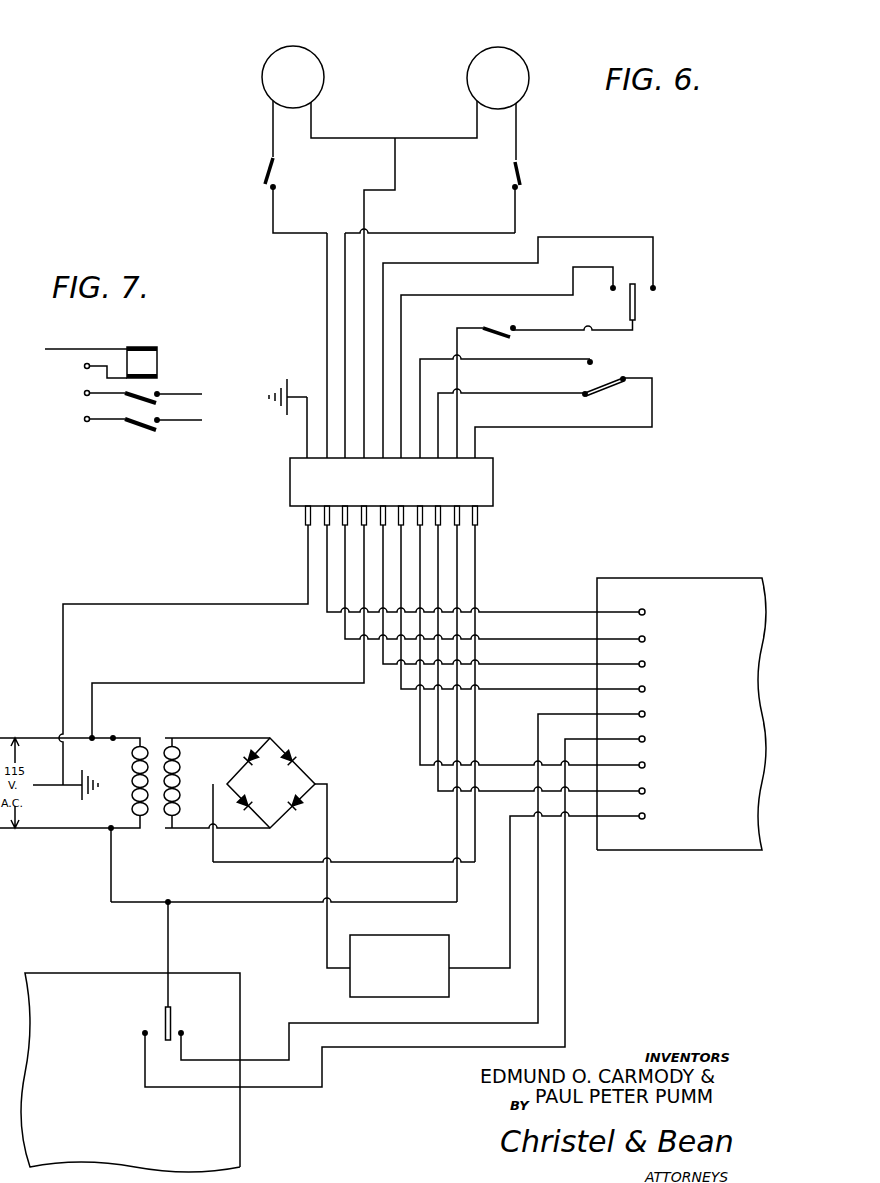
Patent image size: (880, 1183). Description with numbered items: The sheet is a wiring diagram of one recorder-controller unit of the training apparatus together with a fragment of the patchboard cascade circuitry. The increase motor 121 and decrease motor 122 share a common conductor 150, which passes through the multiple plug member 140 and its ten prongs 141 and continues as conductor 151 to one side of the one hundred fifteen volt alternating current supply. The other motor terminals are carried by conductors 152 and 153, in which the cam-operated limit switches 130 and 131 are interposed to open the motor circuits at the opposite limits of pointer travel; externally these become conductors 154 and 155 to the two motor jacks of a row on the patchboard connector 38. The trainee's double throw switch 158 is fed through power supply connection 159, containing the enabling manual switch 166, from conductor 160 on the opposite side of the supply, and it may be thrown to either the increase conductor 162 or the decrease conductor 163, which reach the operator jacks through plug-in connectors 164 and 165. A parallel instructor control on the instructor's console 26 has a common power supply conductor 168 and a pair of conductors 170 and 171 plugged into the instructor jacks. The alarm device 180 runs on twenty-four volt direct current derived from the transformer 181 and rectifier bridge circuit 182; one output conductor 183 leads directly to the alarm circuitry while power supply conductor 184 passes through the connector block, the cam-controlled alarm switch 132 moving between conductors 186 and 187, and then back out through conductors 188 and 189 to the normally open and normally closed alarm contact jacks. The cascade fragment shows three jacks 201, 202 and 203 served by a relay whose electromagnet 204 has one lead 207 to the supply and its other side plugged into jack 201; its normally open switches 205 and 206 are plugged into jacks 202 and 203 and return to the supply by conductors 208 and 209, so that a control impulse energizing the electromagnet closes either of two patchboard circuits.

In FIG. 6, the increase motor 121 is at (312, 51).
In FIG. 6, the decrease motor 122 is at (475, 58).
In FIG. 6, the switch 130 is at (266, 170).
In FIG. 6, the switch 131 is at (520, 176).
In FIG. 6, the common conductor 150 is at (364, 292).
In FIG. 6, the conductor 152 is at (327, 275).
In FIG. 6, the conductor 153 is at (516, 200).
In FIG. 6, the increase conductor 162 is at (655, 258).
In FIG. 6, the decrease conductor 163 is at (573, 281).
In FIG. 6, the double throw switch 158 is at (637, 308).
In FIG. 6, the power supply connection 159 is at (588, 328).
In FIG. 6, the manual switch 166 is at (490, 325).
In FIG. 6, the conductor 186 is at (490, 362).
In FIG. 6, the conductor 187 is at (490, 395).
In FIG. 6, the alarm switch 132 is at (605, 381).
In FIG. 6, the multiple plug member 140 is at (495, 487).
In FIG. 6, the prongs 141 is at (325, 515).
In FIG. 6, the patchboard connector 38 is at (700, 577).
In FIG. 6, the external conductor 154 is at (520, 588).
In FIG. 6, the external conductor 155 is at (543, 637).
In FIG. 6, the plug-in connector 164 is at (512, 666).
In FIG. 6, the plug-in connector 165 is at (538, 692).
In FIG. 6, the conductor 151 is at (215, 680).
In FIG. 6, the conductor 188 is at (420, 713).
In FIG. 6, the conductor 189 is at (437, 777).
In FIG. 6, the conductor 160 is at (457, 852).
In FIG. 6, the power supply conductor 184 is at (345, 865).
In FIG. 6, the output conductor 183 is at (329, 805).
In FIG. 6, the transformer 181 is at (163, 737).
In FIG. 6, the rectifier bridge circuit 182 is at (277, 745).
In FIG. 6, the alarm device 180 is at (350, 990).
In FIG. 6, the instructor's console 26 is at (55, 972).
In FIG. 6, the common power supply conductor 168 is at (168, 937).
In FIG. 6, the conductor 170 is at (213, 1058).
In FIG. 6, the conductor 171 is at (180, 1087).
In FIG. 7, the lead 207 is at (73, 348).
In FIG. 7, the electromagnet 204 is at (160, 362).
In FIG. 7, the jack 201 is at (84, 367).
In FIG. 7, the jack 202 is at (84, 394).
In FIG. 7, the jack 203 is at (84, 420).
In FIG. 7, the switch 205 is at (128, 398).
In FIG. 7, the switch 206 is at (145, 430).
In FIG. 7, the conductor 208 is at (193, 396).
In FIG. 7, the conductor 209 is at (202, 420).